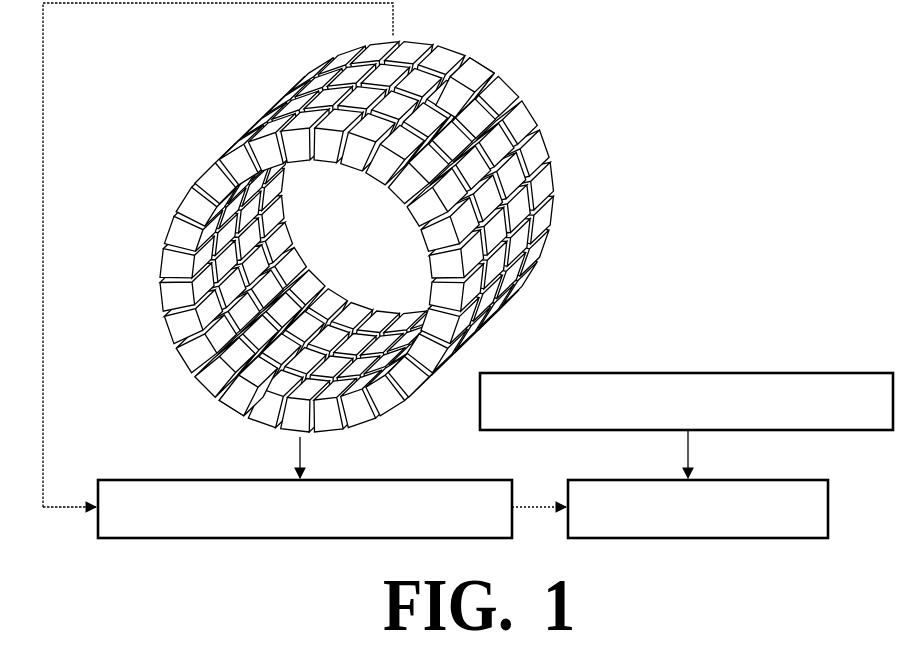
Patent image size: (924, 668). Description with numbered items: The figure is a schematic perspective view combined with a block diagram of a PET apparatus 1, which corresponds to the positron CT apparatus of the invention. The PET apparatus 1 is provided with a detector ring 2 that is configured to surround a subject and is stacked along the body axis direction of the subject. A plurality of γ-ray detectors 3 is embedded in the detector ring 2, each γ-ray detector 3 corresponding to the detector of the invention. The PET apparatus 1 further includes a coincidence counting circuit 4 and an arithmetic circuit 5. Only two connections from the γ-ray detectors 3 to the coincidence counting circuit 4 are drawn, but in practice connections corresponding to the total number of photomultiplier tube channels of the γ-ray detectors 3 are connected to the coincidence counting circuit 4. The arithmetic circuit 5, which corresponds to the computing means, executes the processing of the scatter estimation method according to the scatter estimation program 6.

The PET apparatus 1 is at (468, 270).
The detector ring 2 is at (350, 248).
The γ-ray detector 3 is at (497, 88).
The coincidence counting circuit 4 is at (110, 480).
The arithmetic circuit 5 is at (578, 480).
The scatter estimation program 6 is at (495, 373).